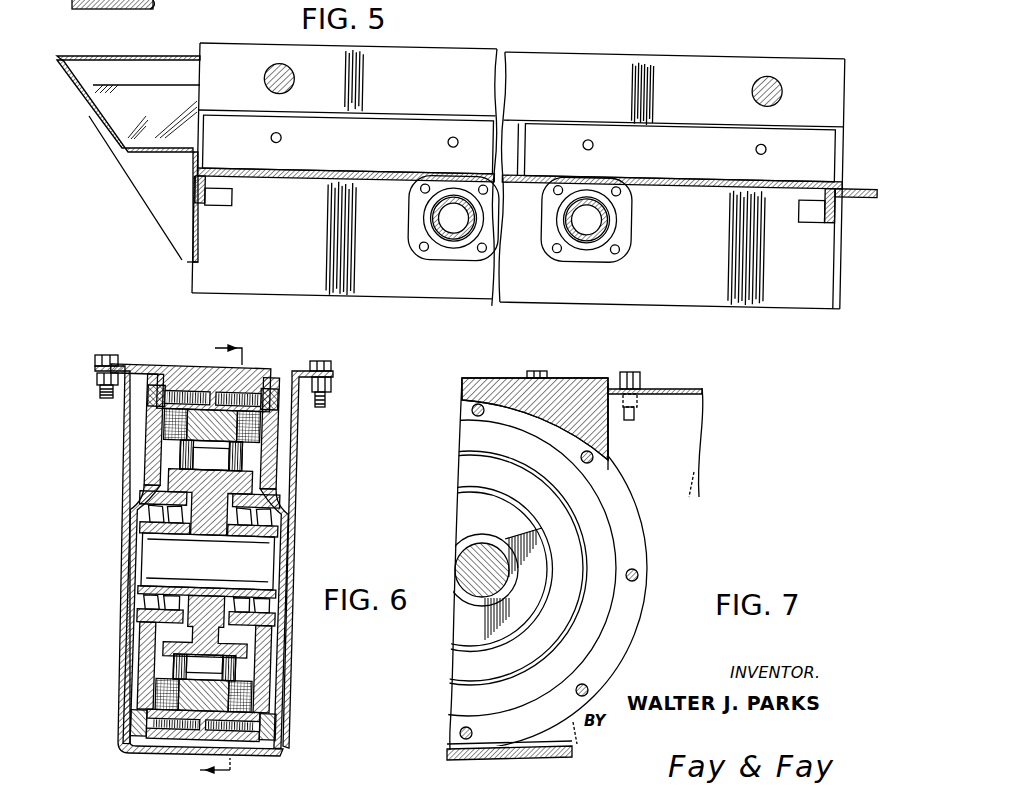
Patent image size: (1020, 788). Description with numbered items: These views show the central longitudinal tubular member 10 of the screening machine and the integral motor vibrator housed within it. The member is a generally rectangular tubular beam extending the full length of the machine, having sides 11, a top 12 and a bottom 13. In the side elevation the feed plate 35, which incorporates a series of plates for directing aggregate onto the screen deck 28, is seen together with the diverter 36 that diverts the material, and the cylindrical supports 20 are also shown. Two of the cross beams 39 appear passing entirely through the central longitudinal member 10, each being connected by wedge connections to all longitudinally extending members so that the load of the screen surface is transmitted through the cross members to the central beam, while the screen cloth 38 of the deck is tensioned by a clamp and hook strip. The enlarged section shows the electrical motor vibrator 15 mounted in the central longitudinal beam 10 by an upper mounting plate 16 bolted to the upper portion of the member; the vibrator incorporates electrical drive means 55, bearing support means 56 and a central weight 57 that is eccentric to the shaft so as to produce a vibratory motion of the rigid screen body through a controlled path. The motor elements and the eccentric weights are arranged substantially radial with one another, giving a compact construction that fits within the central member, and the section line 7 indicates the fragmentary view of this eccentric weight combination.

In FIG. 6, the section line 7— 7 is at (211, 559).
In FIG. 5, the central longitudinal tubular member 10 is at (520, 48).
In FIG. 6, the central longitudinal tubular member 10 is at (300, 448).
In FIG. 7, the central longitudinal tubular member 10 is at (702, 388).
In FIG. 5, the sides 11 is at (804, 298).
In FIG. 6, the sides 11 is at (122, 628).
In FIG. 7, the sides 11 is at (673, 456).
In FIG. 5, the top 12 is at (681, 47).
In FIG. 5, the bottom 13 is at (136, 11).
In FIG. 6, the electrical motor vibrator 15 is at (280, 489).
In FIG. 7, the electrical motor vibrator 15 is at (655, 533).
In FIG. 6, the mounting plate 16 is at (282, 373).
In FIG. 7, the mounting plate 16 is at (660, 381).
In FIG. 5, the cylindrical supports 20 is at (782, 93).
In FIG. 5, the screen deck 28 is at (722, 172).
In FIG. 5, the feed plate 35 is at (104, 124).
In FIG. 5, the diverter 36 is at (163, 144).
In FIG. 5, the screen cloth 38 is at (350, 168).
In FIG. 5, the cross beam 39 is at (428, 226).
In FIG. 6, the electrical drive means 55 is at (252, 688).
In FIG. 7, the electrical drive means 55 is at (467, 697).
In FIG. 6, the bearing support means 56 is at (266, 519).
In FIG. 6, the central weight 57 is at (142, 491).
In FIG. 7, the central weight 57 is at (474, 512).